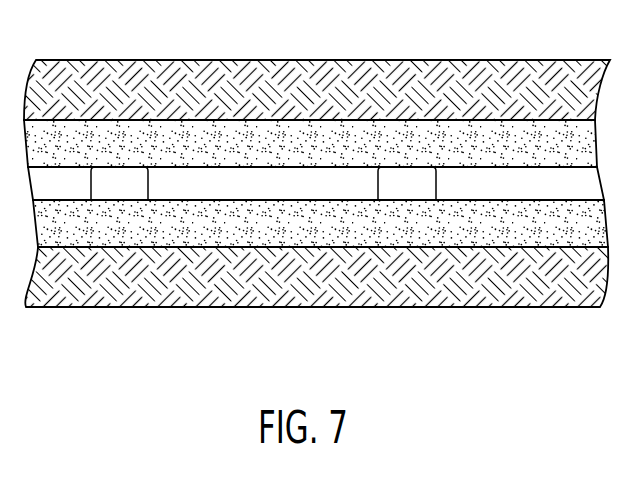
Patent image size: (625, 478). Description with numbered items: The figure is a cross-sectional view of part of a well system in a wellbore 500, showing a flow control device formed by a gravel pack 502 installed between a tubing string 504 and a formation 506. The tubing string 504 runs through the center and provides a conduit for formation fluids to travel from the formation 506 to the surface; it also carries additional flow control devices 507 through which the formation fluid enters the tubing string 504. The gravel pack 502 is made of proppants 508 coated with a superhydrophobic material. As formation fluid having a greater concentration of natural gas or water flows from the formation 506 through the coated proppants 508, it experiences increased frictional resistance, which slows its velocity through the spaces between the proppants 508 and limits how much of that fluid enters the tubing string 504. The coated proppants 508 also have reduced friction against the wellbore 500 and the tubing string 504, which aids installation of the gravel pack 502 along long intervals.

The wellbore 500 is at (317, 186).
The gravel pack 502 is at (232, 232).
The tubing string 504 is at (573, 185).
The formation 506 is at (147, 68).
The flow control devices 507 is at (122, 191).
The proppants 508 is at (245, 133).